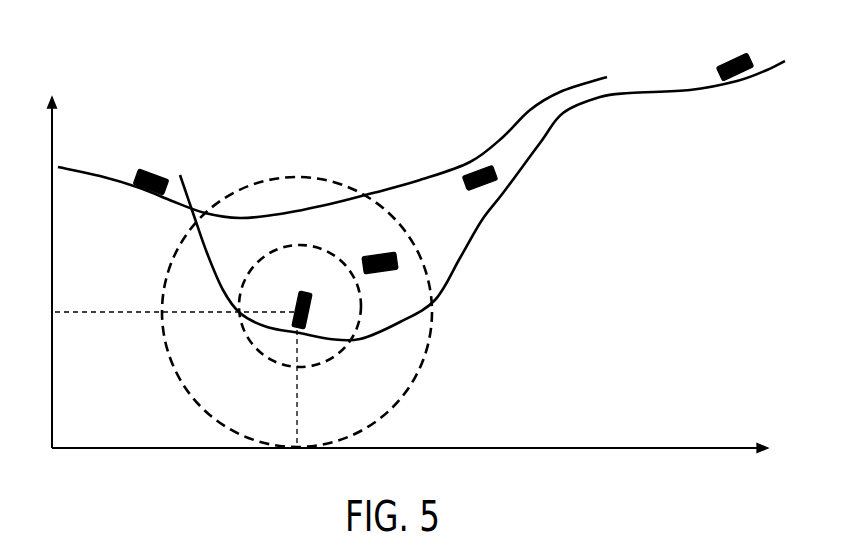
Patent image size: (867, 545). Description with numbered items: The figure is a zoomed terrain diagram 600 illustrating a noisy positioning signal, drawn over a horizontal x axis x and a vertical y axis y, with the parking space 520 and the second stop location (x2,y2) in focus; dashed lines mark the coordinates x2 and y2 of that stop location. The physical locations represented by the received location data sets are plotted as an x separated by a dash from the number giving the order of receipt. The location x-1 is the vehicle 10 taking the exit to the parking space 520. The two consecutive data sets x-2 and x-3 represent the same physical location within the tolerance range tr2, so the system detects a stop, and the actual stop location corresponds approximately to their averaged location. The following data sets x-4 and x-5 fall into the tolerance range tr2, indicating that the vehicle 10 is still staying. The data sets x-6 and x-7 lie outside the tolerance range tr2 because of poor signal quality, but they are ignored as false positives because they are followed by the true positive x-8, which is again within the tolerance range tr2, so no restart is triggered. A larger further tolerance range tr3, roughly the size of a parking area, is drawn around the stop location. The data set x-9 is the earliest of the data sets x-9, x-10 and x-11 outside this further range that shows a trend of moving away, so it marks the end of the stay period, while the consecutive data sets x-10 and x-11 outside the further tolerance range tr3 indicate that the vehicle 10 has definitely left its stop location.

The location data set x-1 is at (155, 173).
The location data set x-2 is at (292, 305).
The location data set x-3 is at (320, 331).
The location data set x-4 is at (338, 286).
The location data set x-5 is at (275, 351).
The location data set x-6 is at (253, 251).
The location data set x-7 is at (265, 392).
The location data set x-8 is at (316, 354).
The location data set x-9 is at (386, 251).
The location data set x-10 is at (471, 191).
The location data set x-11 is at (733, 58).
The vehicle 10 is at (738, 80).
The parking space 520 is at (455, 243).
The terrain diagram 600 is at (332, 145).
The tolerance range tr2 is at (350, 345).
The further tolerance range tr3 is at (174, 343).
The x coordinate of second stop location x2 is at (294, 398).
The y coordinate of second stop location y2 is at (163, 315).
The x axis x is at (410, 459).
The y axis y is at (45, 272).